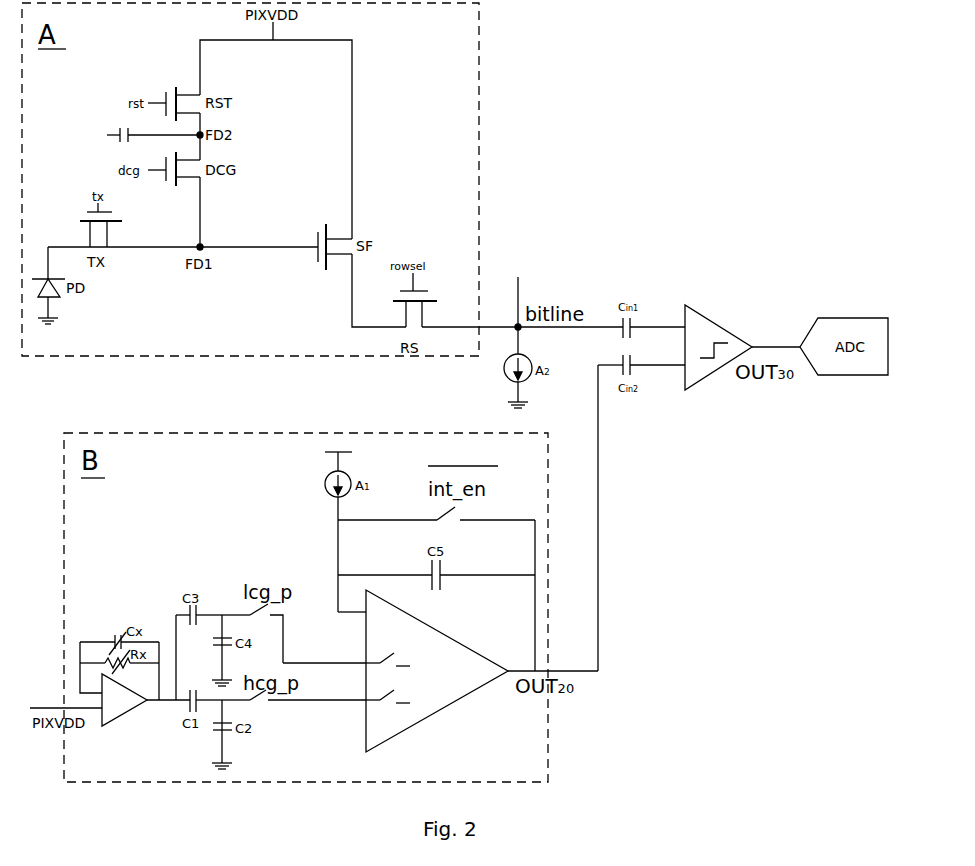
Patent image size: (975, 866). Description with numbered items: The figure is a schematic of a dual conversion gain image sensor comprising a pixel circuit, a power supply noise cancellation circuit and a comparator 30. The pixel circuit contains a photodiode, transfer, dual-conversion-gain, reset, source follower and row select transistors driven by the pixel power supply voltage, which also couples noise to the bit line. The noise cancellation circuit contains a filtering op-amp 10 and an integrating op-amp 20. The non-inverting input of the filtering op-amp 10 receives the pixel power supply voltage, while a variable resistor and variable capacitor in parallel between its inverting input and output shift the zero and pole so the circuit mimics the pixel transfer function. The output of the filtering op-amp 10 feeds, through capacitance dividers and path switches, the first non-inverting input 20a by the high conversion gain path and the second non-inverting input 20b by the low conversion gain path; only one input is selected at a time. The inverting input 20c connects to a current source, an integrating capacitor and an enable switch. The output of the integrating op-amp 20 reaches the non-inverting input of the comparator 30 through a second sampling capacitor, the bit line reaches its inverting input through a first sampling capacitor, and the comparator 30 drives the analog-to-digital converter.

The filtering op-amp 10 is at (120, 716).
The integrating op-amp 20 is at (419, 719).
The first non-inverting input 20a is at (364, 701).
The second non-inverting input 20b is at (364, 664).
The inverting input 20c is at (364, 613).
The comparator 30 is at (712, 375).